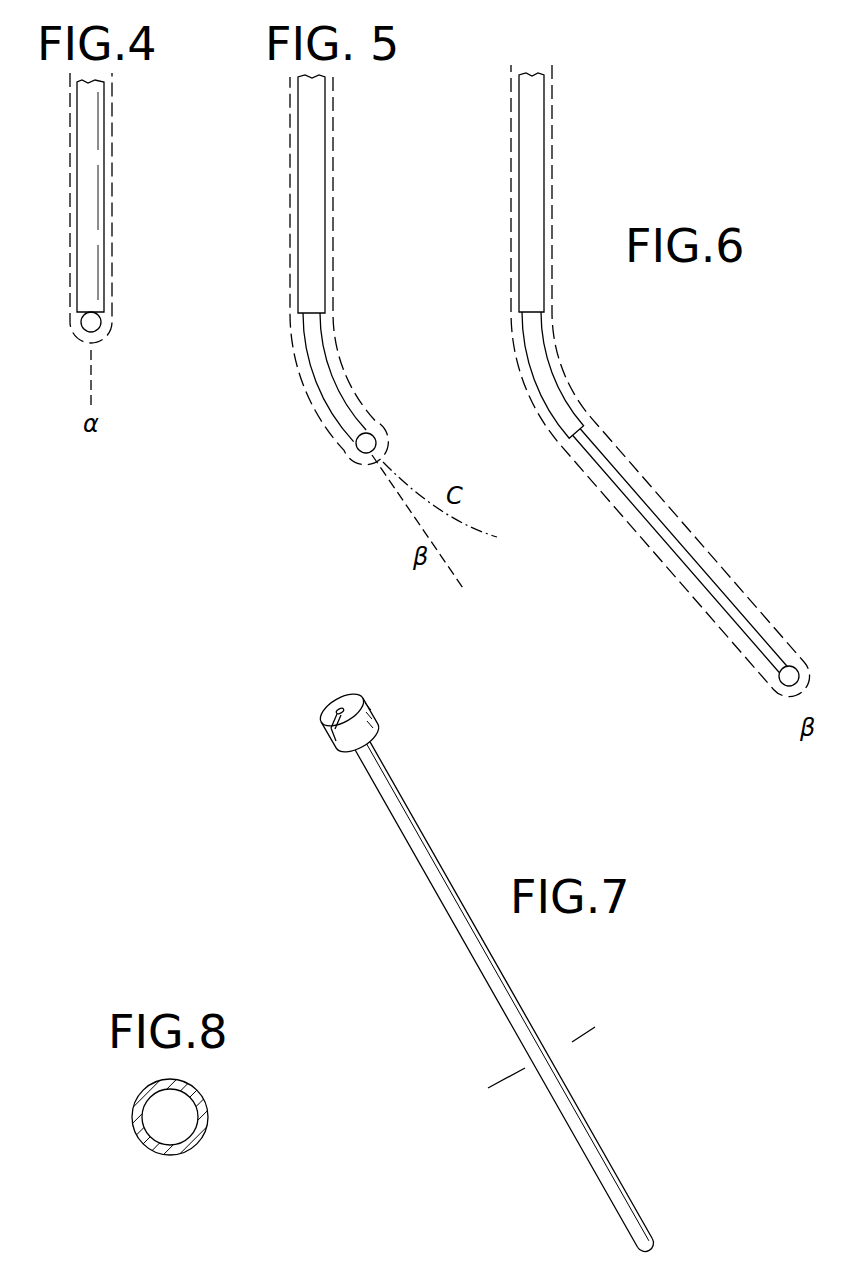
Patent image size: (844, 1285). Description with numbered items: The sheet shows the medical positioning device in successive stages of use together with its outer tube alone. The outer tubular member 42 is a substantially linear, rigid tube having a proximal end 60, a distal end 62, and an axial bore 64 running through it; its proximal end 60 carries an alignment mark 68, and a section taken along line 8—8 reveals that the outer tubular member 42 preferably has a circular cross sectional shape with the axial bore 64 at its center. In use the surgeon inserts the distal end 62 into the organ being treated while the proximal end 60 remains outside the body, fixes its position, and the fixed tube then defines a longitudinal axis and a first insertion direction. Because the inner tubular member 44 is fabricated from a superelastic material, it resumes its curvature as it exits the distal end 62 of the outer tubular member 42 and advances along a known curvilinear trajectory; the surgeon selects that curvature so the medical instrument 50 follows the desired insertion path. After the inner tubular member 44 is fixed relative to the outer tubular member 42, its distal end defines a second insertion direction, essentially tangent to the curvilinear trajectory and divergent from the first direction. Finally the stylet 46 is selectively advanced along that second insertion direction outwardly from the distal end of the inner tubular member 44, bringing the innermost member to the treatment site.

In FIG. 4, the outer tubular member 42 is at (75, 117).
In FIG. 5, the outer tubular member 42 is at (296, 178).
In FIG. 6, the outer tubular member 42 is at (517, 203).
In FIG. 7, the outer tubular member 42 is at (500, 965).
In FIG. 8, the outer tubular member 42 is at (200, 1083).
In FIG. 5, the inner tubular member 44 is at (302, 376).
In FIG. 6, the inner tubular member 44 is at (524, 380).
In FIG. 4, the stylet 46 is at (76, 318).
In FIG. 5, the stylet 46 is at (354, 452).
In FIG. 6, the stylet 46 is at (777, 672).
In FIG. 4, the medical instrument 50 is at (67, 210).
In FIG. 5, the medical instrument 50 is at (288, 125).
In FIG. 6, the medical instrument 50 is at (509, 148).
In FIG. 7, the proximal end 60 is at (379, 740).
In FIG. 7, the distal end 62 is at (635, 1247).
In FIG. 7, the axial bore 64 is at (336, 704).
In FIG. 8, the axial bore 64 is at (177, 1117).
In FIG. 7, the alignment mark 68 is at (329, 722).
In FIG. 7, the section line 8 is at (585, 1026).